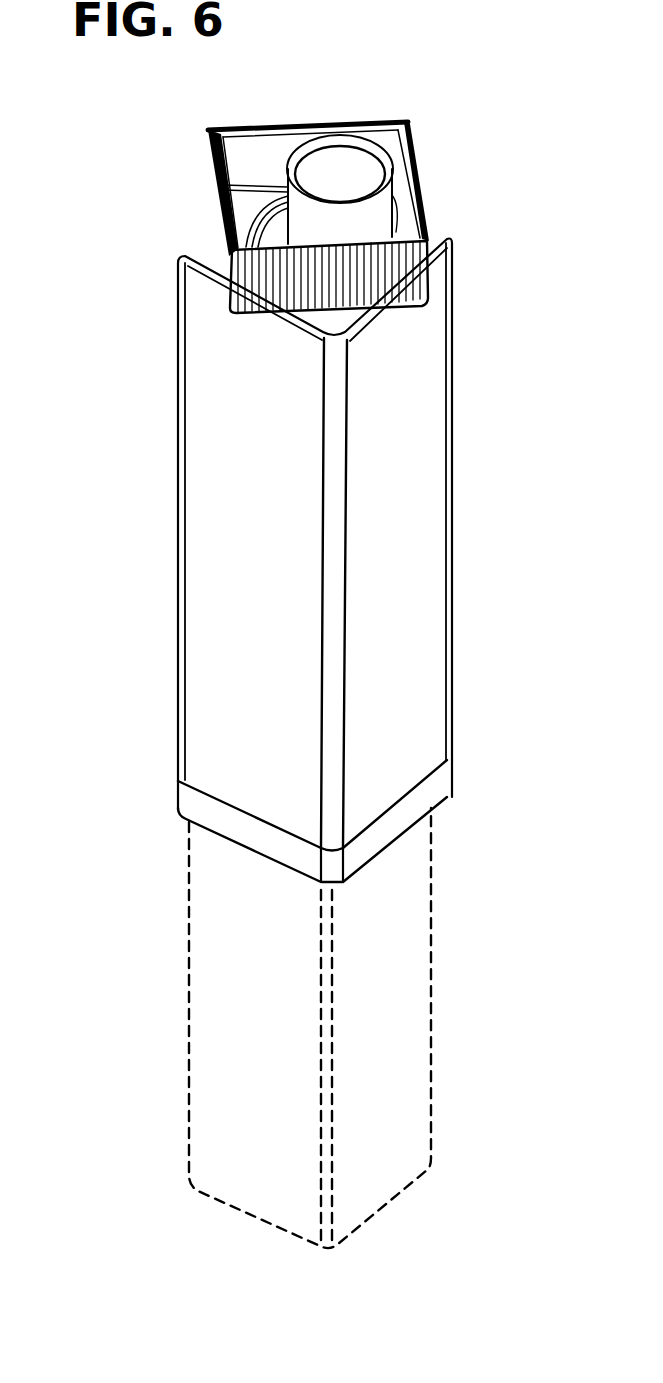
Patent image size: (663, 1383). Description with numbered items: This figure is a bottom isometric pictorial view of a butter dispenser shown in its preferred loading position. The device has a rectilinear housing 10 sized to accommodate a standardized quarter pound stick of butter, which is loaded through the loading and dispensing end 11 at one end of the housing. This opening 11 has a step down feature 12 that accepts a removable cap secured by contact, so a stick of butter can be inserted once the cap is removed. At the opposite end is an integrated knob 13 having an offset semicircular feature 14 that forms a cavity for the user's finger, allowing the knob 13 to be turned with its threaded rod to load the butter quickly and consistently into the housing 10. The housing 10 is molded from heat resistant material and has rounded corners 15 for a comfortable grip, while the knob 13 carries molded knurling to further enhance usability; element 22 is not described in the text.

The rectilinear housing 10 is at (220, 622).
The loading and dispensing end 11 is at (178, 822).
The step down feature 12 is at (198, 807).
The knob 13 is at (251, 205).
The semicircular feature 14 is at (353, 180).
The rounded corners 15 is at (335, 432).
The ribbed skirt of cap 22 is at (262, 281).